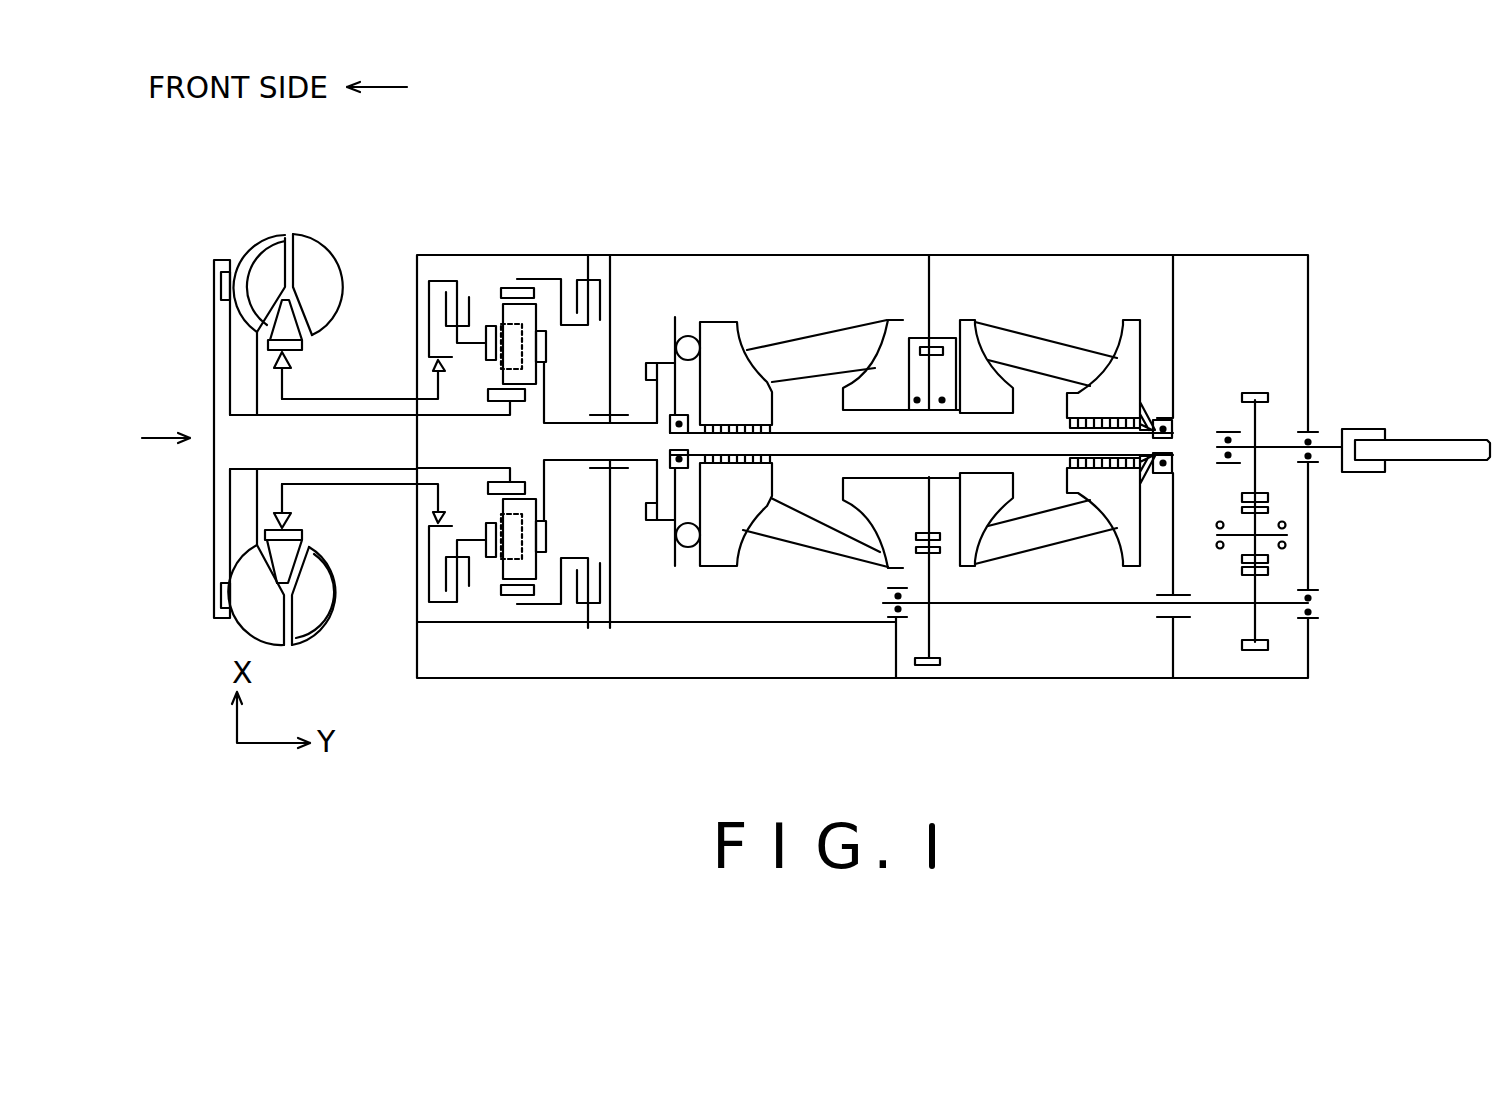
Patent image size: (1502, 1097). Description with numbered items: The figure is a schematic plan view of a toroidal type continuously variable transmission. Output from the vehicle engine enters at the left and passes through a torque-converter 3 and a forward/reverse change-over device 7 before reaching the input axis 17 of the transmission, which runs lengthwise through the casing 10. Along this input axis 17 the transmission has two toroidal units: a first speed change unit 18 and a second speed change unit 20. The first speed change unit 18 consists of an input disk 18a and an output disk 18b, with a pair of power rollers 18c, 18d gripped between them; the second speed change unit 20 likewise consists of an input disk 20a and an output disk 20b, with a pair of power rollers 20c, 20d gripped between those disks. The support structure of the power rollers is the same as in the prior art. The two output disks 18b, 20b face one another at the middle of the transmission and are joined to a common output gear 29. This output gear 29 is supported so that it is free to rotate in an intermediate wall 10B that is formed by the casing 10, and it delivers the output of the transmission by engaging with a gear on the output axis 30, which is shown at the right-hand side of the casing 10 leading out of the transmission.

The torque-converter 3 is at (317, 234).
The forward/reverse change-over device 7 is at (481, 272).
The casing 10 is at (1238, 255).
The intermediate wall 10B is at (932, 283).
The input axis 17 is at (817, 457).
The first speed change unit 18 is at (808, 440).
The input disk 18a is at (717, 320).
The output disk 18b is at (897, 320).
The power roller 18c is at (867, 320).
The power roller 18d is at (862, 547).
The second speed change unit 20 is at (1110, 453).
The input disk 20a is at (1137, 317).
The output disk 20b is at (968, 320).
The power roller 20c is at (1075, 347).
The power roller 20d is at (1032, 540).
The output gear 29 is at (952, 510).
The output axis 30 is at (1110, 603).